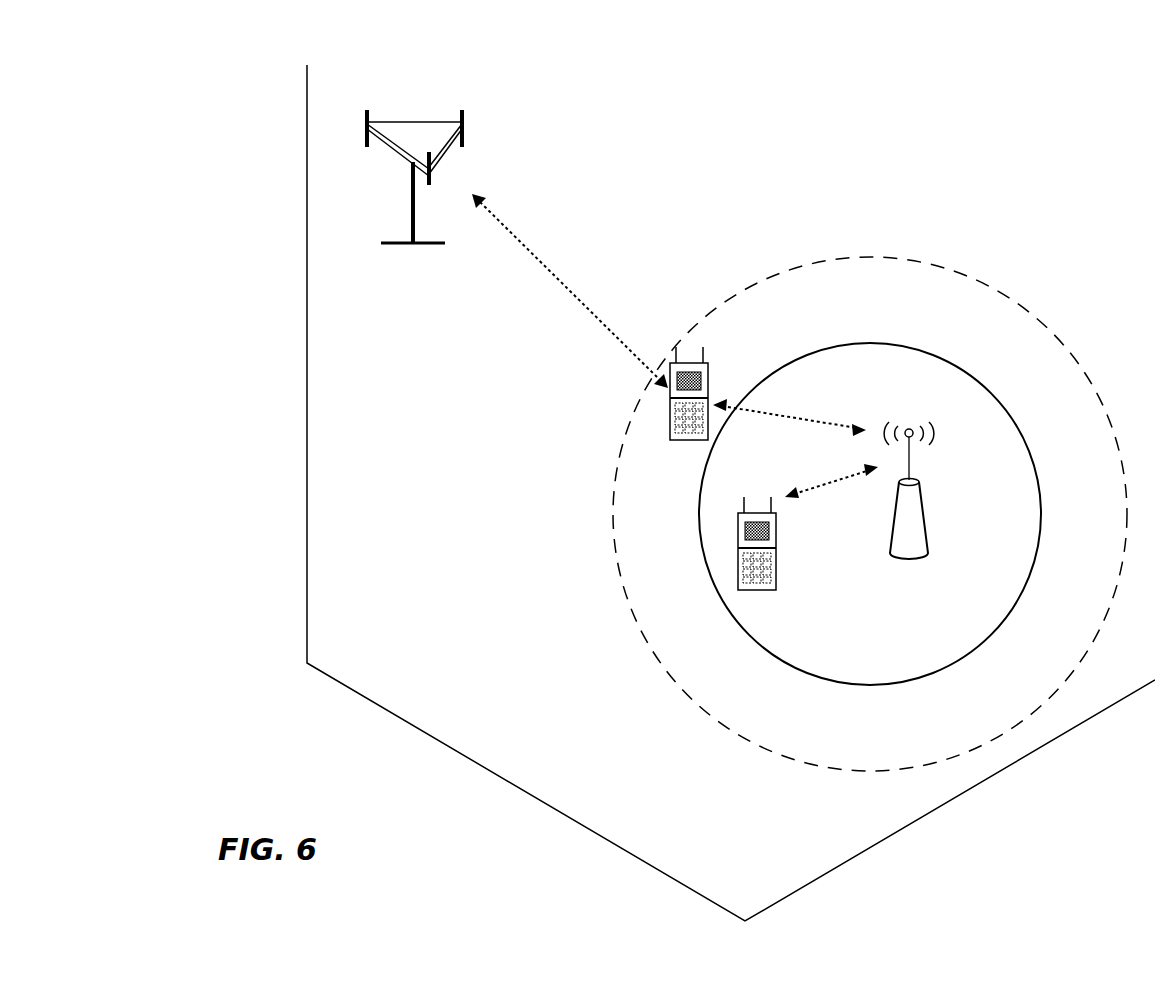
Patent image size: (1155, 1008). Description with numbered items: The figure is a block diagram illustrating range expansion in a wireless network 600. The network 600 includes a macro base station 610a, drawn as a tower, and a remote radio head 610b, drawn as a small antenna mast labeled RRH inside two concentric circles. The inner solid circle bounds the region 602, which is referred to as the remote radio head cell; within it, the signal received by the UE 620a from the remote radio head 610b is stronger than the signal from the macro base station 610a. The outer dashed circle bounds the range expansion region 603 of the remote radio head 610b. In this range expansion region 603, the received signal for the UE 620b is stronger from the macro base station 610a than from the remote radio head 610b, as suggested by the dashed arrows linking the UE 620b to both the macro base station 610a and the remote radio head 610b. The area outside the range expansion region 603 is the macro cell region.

The network 600 is at (240, 82).
The region 602 is at (860, 343).
The range expansion region 603 is at (885, 257).
The macro base station 610a is at (403, 121).
The remote radio head 610b is at (927, 536).
The UE 620a is at (737, 578).
The UE 620b is at (669, 430).